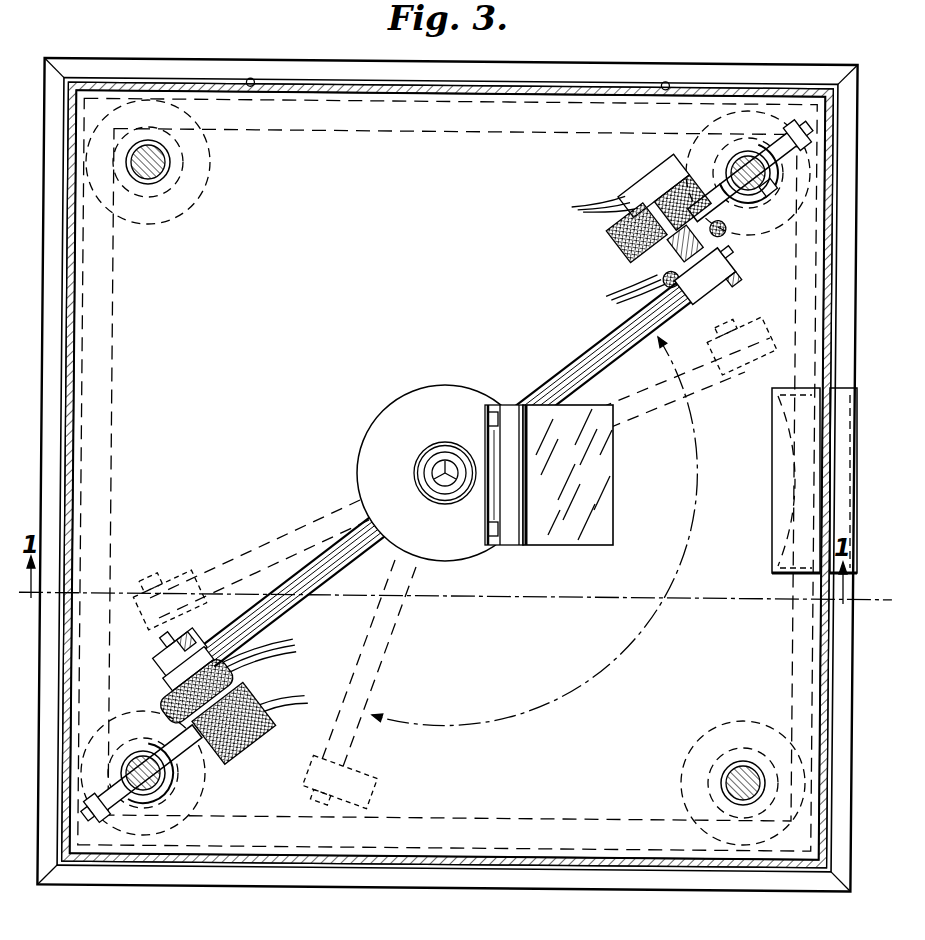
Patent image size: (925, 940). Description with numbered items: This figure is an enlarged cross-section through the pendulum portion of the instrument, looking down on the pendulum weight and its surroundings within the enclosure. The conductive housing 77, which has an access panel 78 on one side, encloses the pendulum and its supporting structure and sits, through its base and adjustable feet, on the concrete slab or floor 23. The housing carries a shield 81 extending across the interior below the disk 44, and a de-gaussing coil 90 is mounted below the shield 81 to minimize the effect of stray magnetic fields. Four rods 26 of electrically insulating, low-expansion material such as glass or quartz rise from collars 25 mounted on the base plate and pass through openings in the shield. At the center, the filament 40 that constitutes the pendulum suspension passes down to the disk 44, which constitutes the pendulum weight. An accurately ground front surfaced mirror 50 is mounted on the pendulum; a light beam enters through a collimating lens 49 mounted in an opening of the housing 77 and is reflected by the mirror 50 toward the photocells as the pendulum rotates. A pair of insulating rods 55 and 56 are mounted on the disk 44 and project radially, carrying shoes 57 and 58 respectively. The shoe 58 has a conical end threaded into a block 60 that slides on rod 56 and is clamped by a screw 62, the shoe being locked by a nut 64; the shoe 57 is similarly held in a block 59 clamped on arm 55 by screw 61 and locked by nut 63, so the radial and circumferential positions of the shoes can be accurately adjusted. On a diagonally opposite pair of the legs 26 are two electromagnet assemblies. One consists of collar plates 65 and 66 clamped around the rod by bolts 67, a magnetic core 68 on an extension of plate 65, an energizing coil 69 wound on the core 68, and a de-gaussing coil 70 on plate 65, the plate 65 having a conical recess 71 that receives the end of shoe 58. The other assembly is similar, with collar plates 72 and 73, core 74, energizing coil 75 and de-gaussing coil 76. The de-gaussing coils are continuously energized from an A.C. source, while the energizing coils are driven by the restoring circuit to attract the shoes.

The concrete slab or floor 23 is at (745, 893).
The collars 25 is at (192, 203).
The rods 26 is at (163, 163).
The filament 40 is at (448, 465).
The disk 44 is at (437, 393).
The collimating lens 49 is at (775, 506).
The front surfaced mirror 50 is at (594, 472).
The rod 55 is at (252, 548).
The rod 56 is at (581, 373).
The shoe 57 is at (173, 637).
The shoe 58 is at (721, 243).
The block 59 is at (190, 636).
The block 60 is at (729, 278).
The screw 61 is at (180, 681).
The screw 62 is at (723, 263).
The nut 63 is at (163, 657).
The nut 64 is at (736, 291).
The collar plate 65 is at (773, 186).
The collar plate 66 is at (740, 152).
The bolts 67 is at (783, 130).
The magnetic core 68 is at (640, 190).
The energizing coil 69 is at (632, 229).
The de-gaussing coil 70 is at (660, 293).
The conical recess 71 is at (670, 251).
The collar plate 72 is at (118, 760).
The collar plate 73 is at (167, 793).
The core 74 is at (263, 746).
The energizing coil 75 is at (266, 720).
The de-gaussing coil 76 is at (233, 668).
The conductive housing 77 is at (588, 867).
The access panel 78 is at (540, 82).
The shield 81 is at (513, 776).
The de-gaussing coil 90 is at (527, 840).